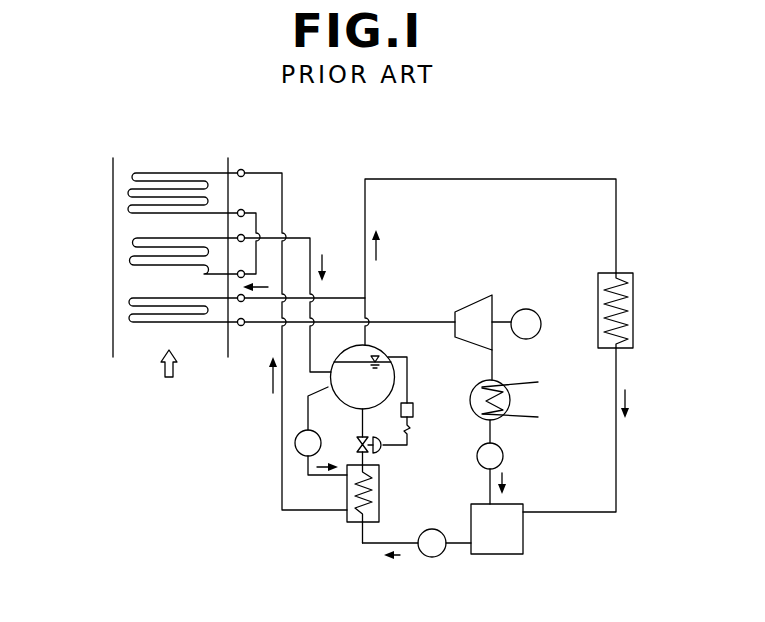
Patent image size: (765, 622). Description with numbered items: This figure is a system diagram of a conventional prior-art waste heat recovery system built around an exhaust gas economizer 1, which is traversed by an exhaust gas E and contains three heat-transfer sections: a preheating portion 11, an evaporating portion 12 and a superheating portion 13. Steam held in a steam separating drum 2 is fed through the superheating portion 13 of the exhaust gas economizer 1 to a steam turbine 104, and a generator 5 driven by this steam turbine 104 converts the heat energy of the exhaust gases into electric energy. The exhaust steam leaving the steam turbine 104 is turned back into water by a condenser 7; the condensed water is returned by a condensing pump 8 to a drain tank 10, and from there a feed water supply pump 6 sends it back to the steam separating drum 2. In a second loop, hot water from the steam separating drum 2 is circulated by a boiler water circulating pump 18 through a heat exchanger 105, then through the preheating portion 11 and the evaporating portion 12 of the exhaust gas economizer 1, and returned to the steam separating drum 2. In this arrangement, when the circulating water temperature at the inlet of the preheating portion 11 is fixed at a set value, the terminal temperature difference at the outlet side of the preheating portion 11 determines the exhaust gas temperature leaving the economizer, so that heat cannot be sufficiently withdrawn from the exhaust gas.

The exhaust gas economizer 1 is at (104, 178).
The preheating portion 11 is at (130, 189).
The evaporating portion 12 is at (129, 256).
The superheating portion 13 is at (129, 312).
The steam separating drum 2 is at (390, 353).
The boiler water circulating pump 18 is at (296, 447).
The heat exchanger 105 is at (379, 490).
The steam turbine 104 is at (467, 305).
The generator 5 is at (533, 309).
The condenser 7 is at (512, 398).
The condensing pump 8 is at (503, 453).
The drain tank 10 is at (523, 537).
The feed water supply pump 6 is at (438, 558).